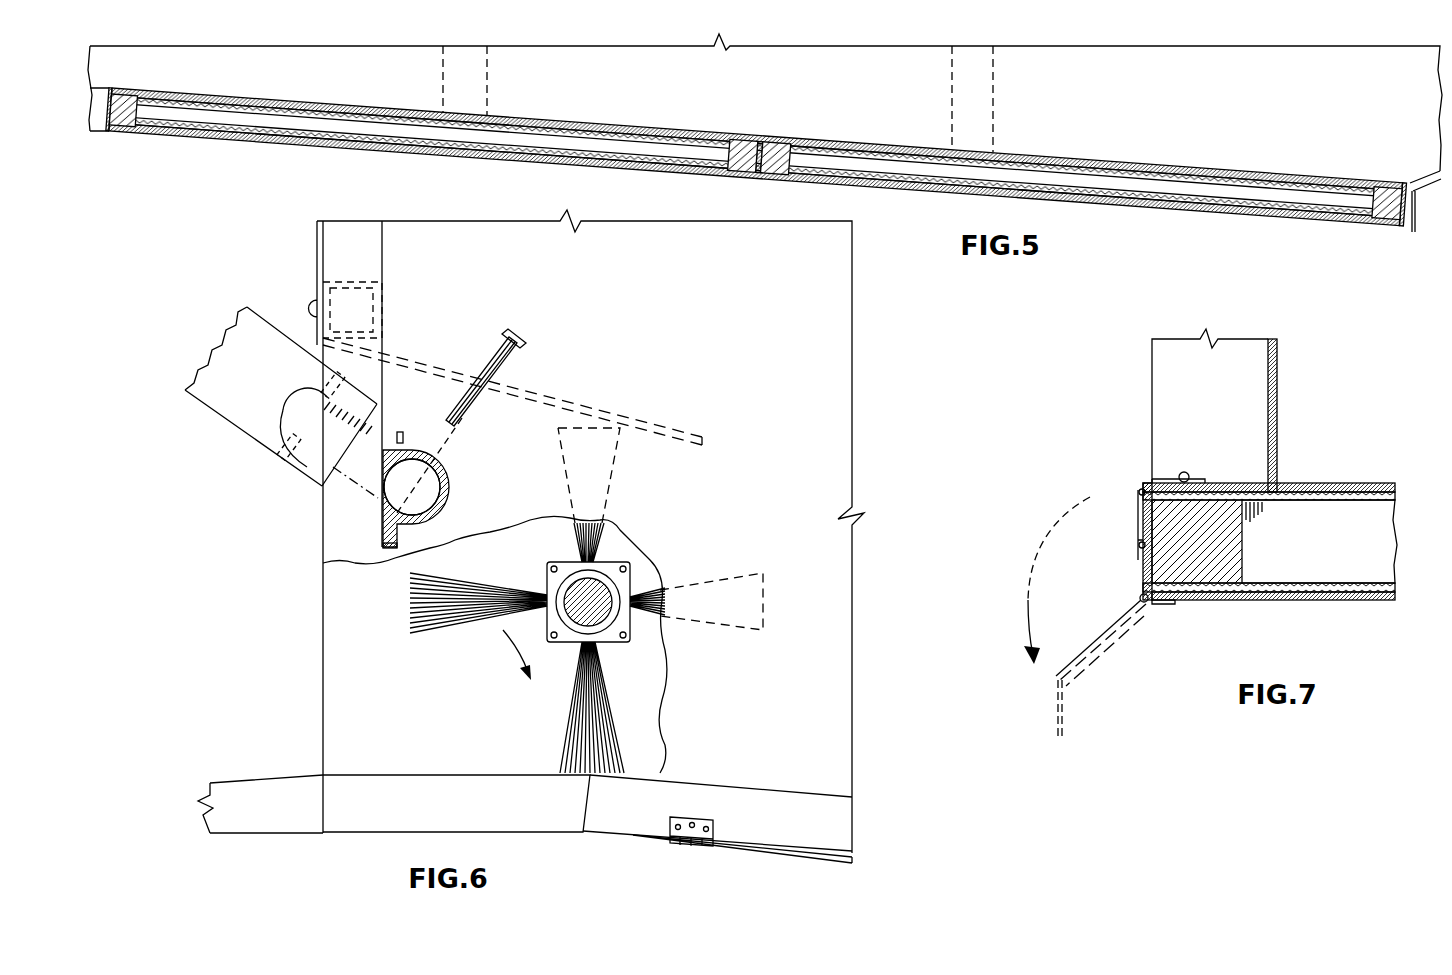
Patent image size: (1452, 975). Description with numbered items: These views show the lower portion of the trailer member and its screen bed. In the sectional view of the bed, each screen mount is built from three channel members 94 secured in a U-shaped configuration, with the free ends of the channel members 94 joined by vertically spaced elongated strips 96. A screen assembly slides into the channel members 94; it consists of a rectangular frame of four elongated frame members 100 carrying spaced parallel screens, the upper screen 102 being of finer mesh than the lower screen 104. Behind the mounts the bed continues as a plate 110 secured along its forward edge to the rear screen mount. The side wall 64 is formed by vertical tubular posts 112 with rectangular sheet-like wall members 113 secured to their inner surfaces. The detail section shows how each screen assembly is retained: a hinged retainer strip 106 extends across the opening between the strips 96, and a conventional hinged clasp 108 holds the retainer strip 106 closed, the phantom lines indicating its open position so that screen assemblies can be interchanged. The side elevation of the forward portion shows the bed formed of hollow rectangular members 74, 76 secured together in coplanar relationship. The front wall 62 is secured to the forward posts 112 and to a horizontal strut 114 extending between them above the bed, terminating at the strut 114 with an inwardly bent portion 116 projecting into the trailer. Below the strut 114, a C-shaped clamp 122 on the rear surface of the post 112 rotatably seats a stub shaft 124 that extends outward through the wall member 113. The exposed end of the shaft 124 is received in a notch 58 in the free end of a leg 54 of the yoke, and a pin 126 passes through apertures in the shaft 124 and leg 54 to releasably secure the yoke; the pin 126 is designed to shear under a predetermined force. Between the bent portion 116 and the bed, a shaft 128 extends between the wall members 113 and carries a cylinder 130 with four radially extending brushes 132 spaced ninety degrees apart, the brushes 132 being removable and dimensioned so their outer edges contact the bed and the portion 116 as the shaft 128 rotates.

In FIG. 6, the legs 54 is at (214, 412).
In FIG. 6, the notches 58 is at (314, 471).
In FIG. 6, the front wall 62 is at (308, 256).
In FIG. 5, the side wall 64 is at (801, 94).
In FIG. 6, the hollow rectangular member 74 is at (255, 815).
In FIG. 5, the hollow rectangular member 76 is at (99, 136).
In FIG. 6, the hollow rectangular member 76 is at (415, 815).
In FIG. 5, the channel members 94 is at (122, 134).
In FIG. 7, the channel members 94 is at (1304, 483).
In FIG. 6, the elongated strips 96 is at (761, 847).
In FIG. 7, the elongated strips 96 is at (1232, 483).
In FIG. 5, the frame members 100 is at (147, 124).
In FIG. 7, the frame members 100 is at (1392, 531).
In FIG. 5, the upper screen 102 is at (324, 103).
In FIG. 7, the upper screen 102 is at (1353, 494).
In FIG. 5, the lower screen 104 is at (310, 133).
In FIG. 7, the lower screen 104 is at (1352, 592).
In FIG. 6, the hinged retainer strip 106 is at (752, 820).
In FIG. 7, the hinged retainer strip 106 is at (1142, 541).
In FIG. 7, the hinged clasp 108 is at (1160, 478).
In FIG. 5, the plate 110 is at (1430, 190).
In FIG. 5, the tubular post 112 is at (490, 74).
In FIG. 6, the tubular post 112 is at (338, 521).
In FIG. 7, the tubular post 112 is at (1197, 411).
In FIG. 6, the wall member 113 is at (687, 344).
In FIG. 7, the wall member 113 is at (1278, 376).
In FIG. 6, the horizontal strut 114 is at (355, 282).
In FIG. 6, the inwardly bent portion 116 is at (545, 397).
In FIG. 6, the C-shaped clamp 122 is at (447, 471).
In FIG. 6, the stub shaft 124 is at (441, 488).
In FIG. 6, the pin 126 is at (494, 359).
In FIG. 6, the shaft 128 is at (572, 582).
In FIG. 6, the cylinder 130 is at (606, 645).
In FIG. 6, the brushes 132 is at (614, 462).